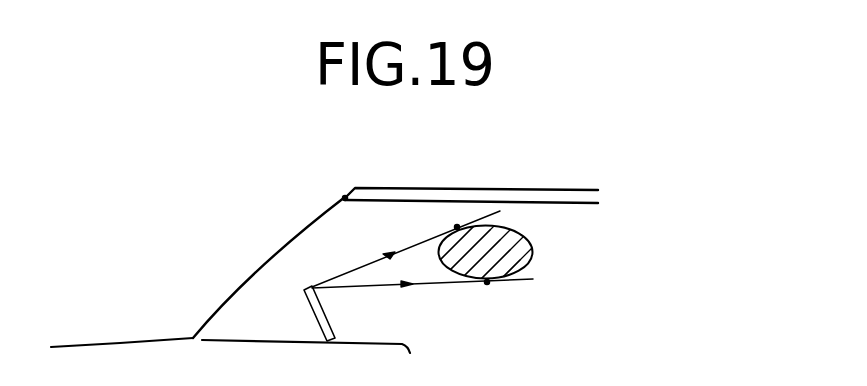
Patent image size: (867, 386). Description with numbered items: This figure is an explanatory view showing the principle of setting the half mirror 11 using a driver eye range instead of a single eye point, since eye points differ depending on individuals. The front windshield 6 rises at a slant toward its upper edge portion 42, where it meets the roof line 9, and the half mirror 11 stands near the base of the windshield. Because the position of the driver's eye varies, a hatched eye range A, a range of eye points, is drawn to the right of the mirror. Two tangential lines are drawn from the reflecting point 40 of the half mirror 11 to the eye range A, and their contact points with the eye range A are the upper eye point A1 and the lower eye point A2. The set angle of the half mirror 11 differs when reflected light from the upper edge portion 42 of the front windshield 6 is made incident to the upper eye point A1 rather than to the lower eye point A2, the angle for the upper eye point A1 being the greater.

The front windshield 6 is at (235, 290).
The roof 9 is at (408, 192).
The half mirror 11 is at (318, 312).
The reflecting point 40 is at (308, 287).
The upper edge portion 42 is at (342, 196).
The eye range A is at (533, 257).
The upper eye point A1 is at (457, 227).
The lower eye point A2 is at (487, 284).